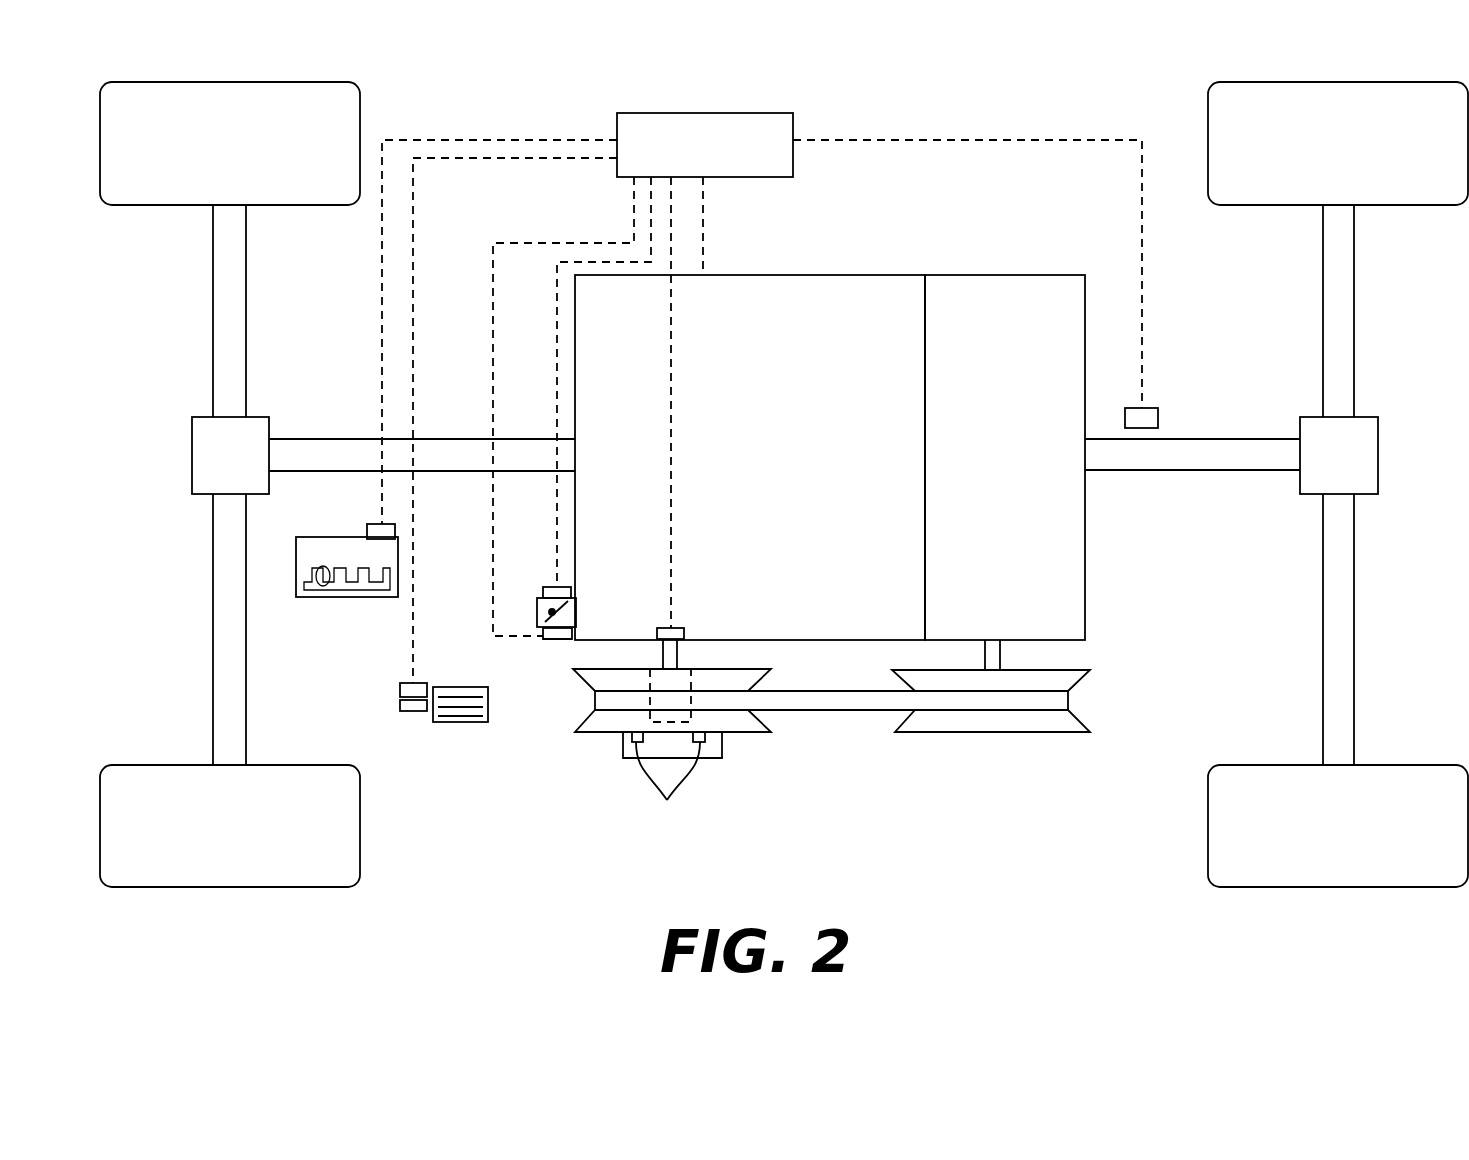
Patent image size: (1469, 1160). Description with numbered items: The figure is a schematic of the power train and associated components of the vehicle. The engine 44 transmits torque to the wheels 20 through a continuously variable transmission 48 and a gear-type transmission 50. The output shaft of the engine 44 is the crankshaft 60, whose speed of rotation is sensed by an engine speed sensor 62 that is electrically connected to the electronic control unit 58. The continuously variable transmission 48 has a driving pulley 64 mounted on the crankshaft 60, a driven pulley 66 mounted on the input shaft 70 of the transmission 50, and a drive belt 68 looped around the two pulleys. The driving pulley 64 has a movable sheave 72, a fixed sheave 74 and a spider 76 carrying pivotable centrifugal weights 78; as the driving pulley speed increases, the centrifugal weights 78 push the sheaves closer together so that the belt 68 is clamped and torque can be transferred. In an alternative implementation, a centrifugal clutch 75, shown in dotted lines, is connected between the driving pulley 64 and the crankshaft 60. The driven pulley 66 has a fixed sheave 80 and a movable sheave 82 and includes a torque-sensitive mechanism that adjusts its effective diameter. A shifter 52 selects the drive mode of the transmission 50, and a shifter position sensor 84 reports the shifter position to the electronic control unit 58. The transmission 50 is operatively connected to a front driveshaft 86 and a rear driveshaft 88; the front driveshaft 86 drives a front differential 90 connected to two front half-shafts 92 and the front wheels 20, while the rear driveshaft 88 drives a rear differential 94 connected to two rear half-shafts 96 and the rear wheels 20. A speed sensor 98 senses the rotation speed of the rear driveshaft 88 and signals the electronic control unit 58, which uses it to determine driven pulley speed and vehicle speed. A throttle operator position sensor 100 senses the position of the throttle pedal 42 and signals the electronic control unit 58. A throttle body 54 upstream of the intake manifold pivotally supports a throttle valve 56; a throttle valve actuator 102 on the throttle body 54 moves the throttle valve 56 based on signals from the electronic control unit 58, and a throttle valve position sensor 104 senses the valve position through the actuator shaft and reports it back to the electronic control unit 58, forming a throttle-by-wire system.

The wheels 20 is at (214, 155).
The throttle pedal 42 is at (452, 722).
The engine 44 is at (784, 469).
The continuously variable transmission 48 is at (813, 754).
The gear-type transmission 50 is at (993, 469).
The shifter 52 is at (322, 597).
The throttle body 54 is at (537, 612).
The throttle valve 56 is at (546, 640).
The electronic control unit 58 is at (795, 178).
The crankshaft 60 is at (663, 655).
The engine speed sensor 62 is at (684, 632).
The driving pulley 64 is at (649, 757).
The driven pulley 66 is at (995, 760).
The drive belt 68 is at (835, 710).
The input shaft 70 is at (1000, 655).
The movable sheave 72 is at (732, 742).
The fixed sheave 74 is at (596, 680).
The centrifugal clutch 75 is at (690, 702).
The spider 76 is at (630, 762).
The centrifugal weights 78 is at (667, 800).
The fixed sheave 80 is at (933, 732).
The movable sheave 82 is at (1023, 678).
The shifter position sensor 84 is at (367, 532).
The front driveshaft 86 is at (462, 439).
The rear driveshaft 88 is at (1180, 470).
The front differential 90 is at (192, 483).
The front half-shafts 92 is at (213, 318).
The rear differential 94 is at (1378, 445).
The rear half-shafts 96 is at (1354, 292).
The speed sensor 98 is at (1158, 410).
The throttle operator position sensor 100 is at (400, 688).
The throttle valve actuator 102 is at (562, 640).
The throttle valve position sensor 104 is at (552, 587).